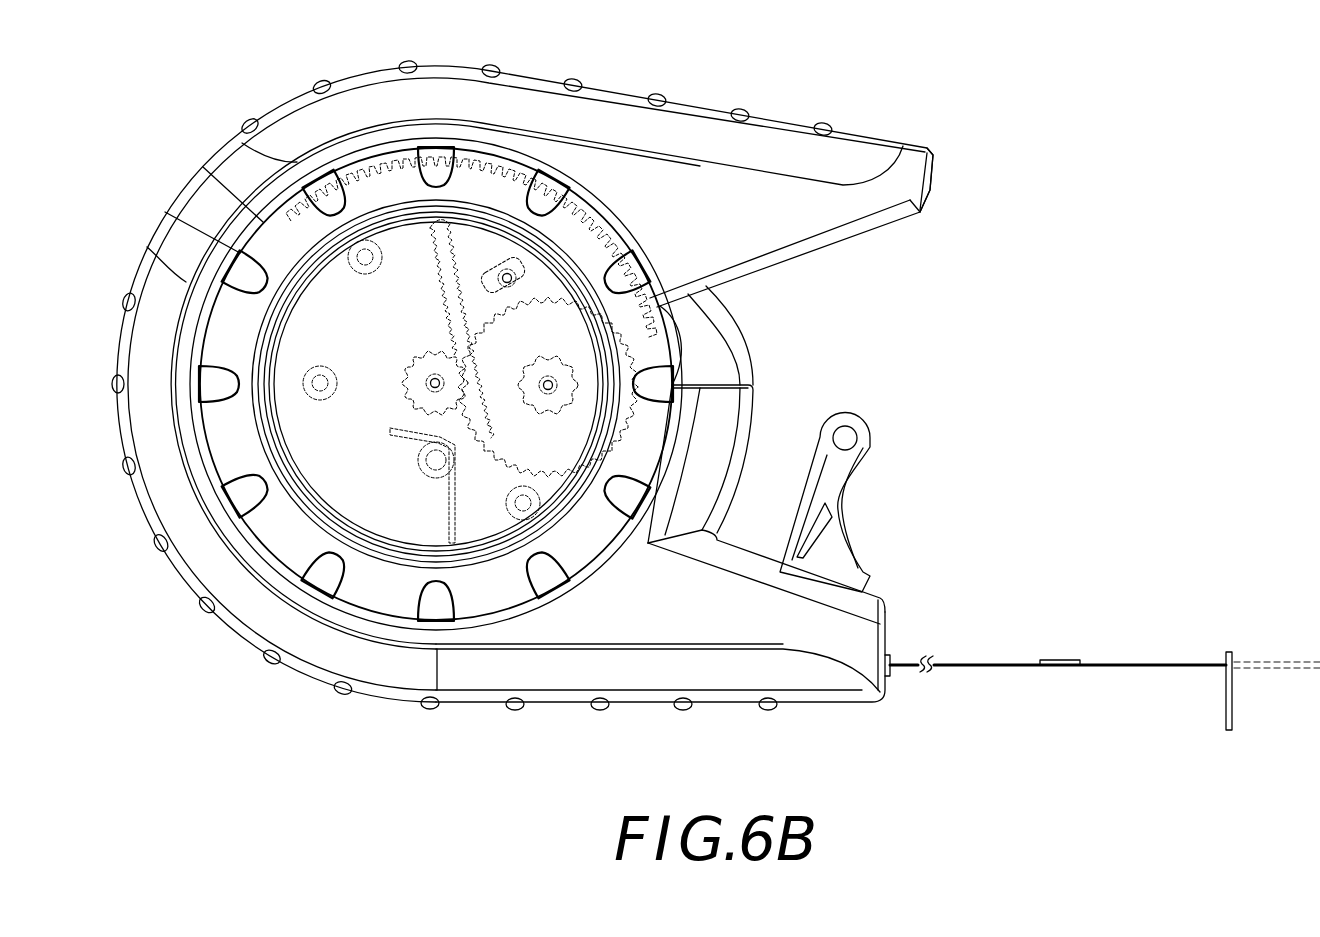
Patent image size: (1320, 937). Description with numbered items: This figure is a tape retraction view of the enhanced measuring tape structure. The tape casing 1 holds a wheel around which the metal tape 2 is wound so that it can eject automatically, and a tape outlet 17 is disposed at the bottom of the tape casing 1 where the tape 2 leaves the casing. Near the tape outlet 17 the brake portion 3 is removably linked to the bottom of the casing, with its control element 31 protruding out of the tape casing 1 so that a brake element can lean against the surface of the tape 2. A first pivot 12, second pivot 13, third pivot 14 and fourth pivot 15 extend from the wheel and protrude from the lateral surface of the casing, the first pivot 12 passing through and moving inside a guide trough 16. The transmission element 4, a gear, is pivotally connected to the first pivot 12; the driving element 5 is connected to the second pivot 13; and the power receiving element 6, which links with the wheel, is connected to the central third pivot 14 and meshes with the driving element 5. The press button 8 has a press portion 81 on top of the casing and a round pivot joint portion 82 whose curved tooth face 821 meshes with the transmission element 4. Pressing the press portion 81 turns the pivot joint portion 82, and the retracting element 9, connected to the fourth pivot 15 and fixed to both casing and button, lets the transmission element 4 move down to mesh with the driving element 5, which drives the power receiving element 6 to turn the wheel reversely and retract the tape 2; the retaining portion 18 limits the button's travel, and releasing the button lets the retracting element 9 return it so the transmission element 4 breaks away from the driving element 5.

The tape casing 1 is at (215, 640).
The metal tape 2 is at (985, 665).
The brake portion 3 is at (872, 549).
The transmission element 4 is at (587, 268).
The driving element 5 is at (540, 438).
The power receiving element 6 is at (410, 392).
The press button 8 is at (229, 121).
The retracting element 9 is at (457, 527).
The first pivot 12 is at (507, 278).
The second pivot 13 is at (550, 387).
The third pivot 14 is at (435, 383).
The fourth pivot 15 is at (435, 463).
The guide trough 16 is at (490, 267).
The tape outlet 17 is at (893, 672).
The retaining portion 18 is at (750, 384).
The control element 31 is at (850, 420).
The press portion 81 is at (1015, 332).
The pivot joint portion 82 is at (238, 452).
The curved tooth face 821 is at (493, 162).